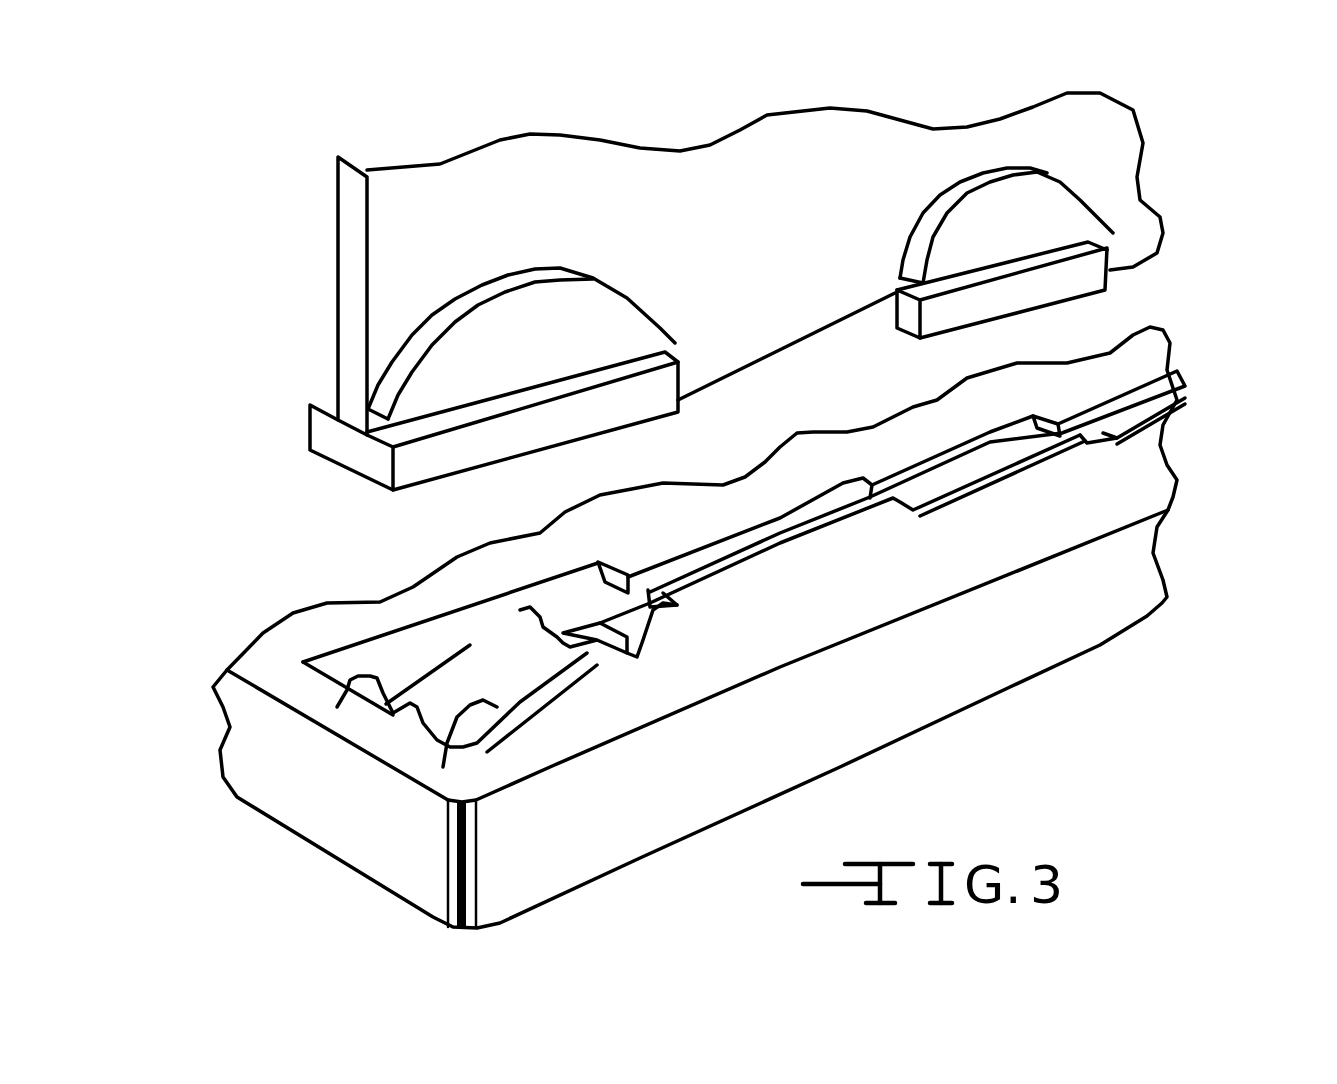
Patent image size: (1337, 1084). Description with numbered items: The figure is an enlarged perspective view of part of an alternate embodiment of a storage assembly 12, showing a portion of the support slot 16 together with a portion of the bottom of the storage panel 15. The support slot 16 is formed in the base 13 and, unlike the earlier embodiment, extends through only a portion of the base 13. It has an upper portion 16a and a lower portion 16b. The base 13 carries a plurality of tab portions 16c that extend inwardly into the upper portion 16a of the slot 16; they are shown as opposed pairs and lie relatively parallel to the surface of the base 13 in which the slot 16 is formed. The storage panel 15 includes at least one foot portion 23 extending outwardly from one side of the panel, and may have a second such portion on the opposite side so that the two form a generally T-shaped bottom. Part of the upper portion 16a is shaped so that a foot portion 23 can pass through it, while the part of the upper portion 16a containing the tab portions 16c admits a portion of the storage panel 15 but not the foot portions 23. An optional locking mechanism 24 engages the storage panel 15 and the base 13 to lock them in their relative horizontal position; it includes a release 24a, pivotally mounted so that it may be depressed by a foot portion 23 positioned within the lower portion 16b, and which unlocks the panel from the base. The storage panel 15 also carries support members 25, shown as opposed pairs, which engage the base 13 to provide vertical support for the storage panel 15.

The storage assembly 12 is at (292, 219).
The base 13 is at (1177, 720).
The storage panel 15 is at (1304, 90).
The support slot 16 is at (229, 567).
The upper portion 16a is at (490, 477).
The lower portion 16b is at (302, 749).
The tab portions 16c is at (820, 588).
The foot portion 23 is at (226, 398).
The locking mechanism 24 is at (316, 497).
The release 24a is at (401, 805).
The support member 25 is at (443, 310).